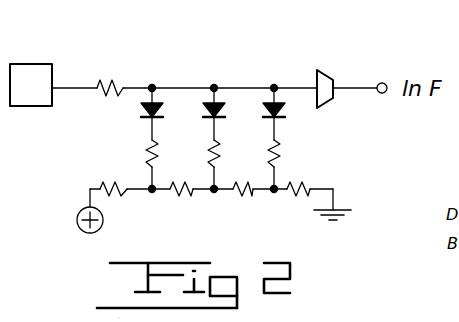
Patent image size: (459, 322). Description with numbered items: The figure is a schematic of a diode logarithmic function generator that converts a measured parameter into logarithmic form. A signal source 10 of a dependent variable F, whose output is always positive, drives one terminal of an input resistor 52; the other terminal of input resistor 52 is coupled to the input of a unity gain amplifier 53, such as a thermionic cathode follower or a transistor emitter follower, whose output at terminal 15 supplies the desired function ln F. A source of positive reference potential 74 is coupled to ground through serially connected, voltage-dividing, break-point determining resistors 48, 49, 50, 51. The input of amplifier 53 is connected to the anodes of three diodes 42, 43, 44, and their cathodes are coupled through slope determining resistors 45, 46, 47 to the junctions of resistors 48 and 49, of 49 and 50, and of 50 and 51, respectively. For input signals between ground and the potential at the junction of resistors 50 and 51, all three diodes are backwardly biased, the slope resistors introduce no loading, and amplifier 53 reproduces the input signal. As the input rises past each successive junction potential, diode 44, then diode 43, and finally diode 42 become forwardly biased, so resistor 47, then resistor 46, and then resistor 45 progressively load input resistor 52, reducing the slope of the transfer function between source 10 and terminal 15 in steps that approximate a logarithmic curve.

The signal source 10 is at (28, 64).
The input resistor 52 is at (103, 85).
The diode 42 is at (142, 119).
The diode 43 is at (213, 118).
The diode 44 is at (282, 118).
The slope determining resistor 45 is at (145, 148).
The slope determining resistor 46 is at (214, 151).
The slope determining resistor 47 is at (279, 152).
The break-point determining resistor 48 is at (130, 196).
The break-point determining resistor 49 is at (192, 196).
The break-point determining resistor 50 is at (252, 196).
The break-point determining resistor 51 is at (300, 196).
The unity gain amplifier 53 is at (325, 72).
The terminal 15 is at (380, 93).
The source of positive reference potential 74 is at (80, 229).